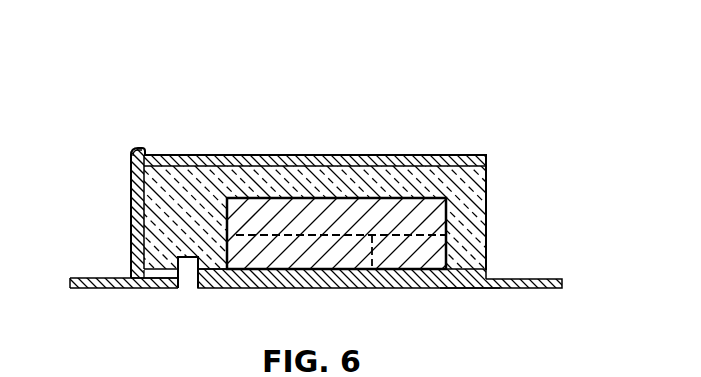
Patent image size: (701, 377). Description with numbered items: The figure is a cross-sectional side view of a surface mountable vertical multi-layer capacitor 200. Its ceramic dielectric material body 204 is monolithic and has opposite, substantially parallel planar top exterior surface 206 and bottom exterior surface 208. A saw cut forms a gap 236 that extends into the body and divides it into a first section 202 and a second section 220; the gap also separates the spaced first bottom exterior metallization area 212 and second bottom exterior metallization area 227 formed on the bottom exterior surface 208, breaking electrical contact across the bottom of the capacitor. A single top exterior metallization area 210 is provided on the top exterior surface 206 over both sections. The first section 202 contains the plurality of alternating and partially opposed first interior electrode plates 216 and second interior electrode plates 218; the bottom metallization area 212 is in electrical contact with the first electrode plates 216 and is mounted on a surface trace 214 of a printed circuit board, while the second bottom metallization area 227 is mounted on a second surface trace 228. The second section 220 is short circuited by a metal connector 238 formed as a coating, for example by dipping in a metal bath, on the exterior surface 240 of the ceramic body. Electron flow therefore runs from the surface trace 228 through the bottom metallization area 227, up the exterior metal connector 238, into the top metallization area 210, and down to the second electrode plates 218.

The capacitor 200 is at (134, 91).
The first section 202 is at (541, 185).
The ceramic dielectric material body 204 is at (189, 183).
The top exterior surface 206 is at (331, 165).
The bottom exterior surface 208 is at (142, 284).
The top exterior metallization area 210 is at (487, 158).
The first bottom exterior metallization area 212 is at (486, 273).
The surface trace 214 is at (503, 284).
The first interior electrode plates 216 is at (287, 263).
The second interior electrode plates 218 is at (377, 270).
The second section 220 is at (64, 195).
The second bottom exterior metallization area 227 is at (172, 288).
The surface trace 228 is at (75, 290).
The gap 236 is at (188, 270).
The metal connector 238 is at (131, 181).
The exterior surface 240 is at (143, 219).